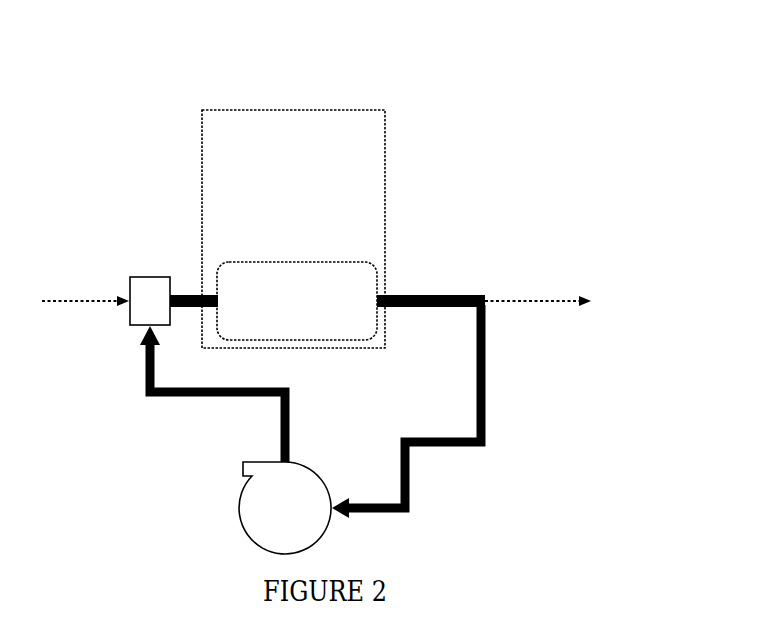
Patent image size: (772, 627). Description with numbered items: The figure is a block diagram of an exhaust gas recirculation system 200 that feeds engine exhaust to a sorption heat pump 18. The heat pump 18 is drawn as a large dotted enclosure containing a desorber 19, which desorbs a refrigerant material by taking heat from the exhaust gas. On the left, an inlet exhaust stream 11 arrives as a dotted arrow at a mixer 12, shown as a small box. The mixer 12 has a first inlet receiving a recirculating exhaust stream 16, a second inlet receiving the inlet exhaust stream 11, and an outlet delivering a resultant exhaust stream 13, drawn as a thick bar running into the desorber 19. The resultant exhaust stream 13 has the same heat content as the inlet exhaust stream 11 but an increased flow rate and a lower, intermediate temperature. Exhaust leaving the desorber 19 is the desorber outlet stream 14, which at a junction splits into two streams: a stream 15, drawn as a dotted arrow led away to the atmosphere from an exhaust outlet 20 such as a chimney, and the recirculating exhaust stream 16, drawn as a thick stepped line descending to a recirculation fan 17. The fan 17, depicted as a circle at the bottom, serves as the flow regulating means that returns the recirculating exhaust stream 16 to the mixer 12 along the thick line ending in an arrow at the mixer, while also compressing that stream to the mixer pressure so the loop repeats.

The inlet exhaust stream 11 is at (73, 300).
The mixer 12 is at (128, 272).
The resultant exhaust stream 13 is at (183, 297).
The desorber outlet stream 14 is at (456, 295).
The stream 15 is at (537, 300).
The recirculating exhaust stream 16 is at (483, 398).
The recirculation fan 17 is at (240, 518).
The sorption heat pump 18 is at (345, 177).
The desorber 19 is at (352, 288).
The exhaust outlet 20 is at (483, 299).
The exhaust gas recirculation system 200 is at (580, 148).